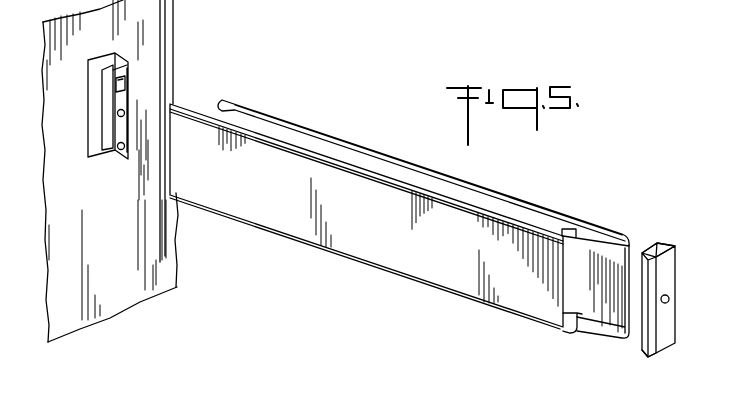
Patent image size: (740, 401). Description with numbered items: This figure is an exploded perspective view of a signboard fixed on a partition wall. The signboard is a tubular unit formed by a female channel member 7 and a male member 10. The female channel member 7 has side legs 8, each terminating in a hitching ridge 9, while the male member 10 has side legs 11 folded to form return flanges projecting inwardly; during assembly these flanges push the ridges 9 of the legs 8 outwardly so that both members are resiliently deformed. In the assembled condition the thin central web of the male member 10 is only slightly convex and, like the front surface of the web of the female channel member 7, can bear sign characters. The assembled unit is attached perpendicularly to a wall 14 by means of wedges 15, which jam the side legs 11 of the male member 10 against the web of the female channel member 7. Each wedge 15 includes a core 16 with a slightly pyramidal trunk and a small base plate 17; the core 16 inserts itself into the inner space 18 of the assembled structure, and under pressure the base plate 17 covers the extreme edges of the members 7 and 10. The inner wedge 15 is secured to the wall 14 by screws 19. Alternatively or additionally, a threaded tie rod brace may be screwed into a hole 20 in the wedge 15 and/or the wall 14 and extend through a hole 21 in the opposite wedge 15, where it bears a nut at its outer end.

The female channel member 7 is at (253, 210).
The side legs 8 is at (358, 163).
The hitching ridge 9 is at (320, 0).
The male member 10 is at (601, 304).
The side legs 11 is at (609, 232).
The wall 14 is at (163, 26).
The wedges 15 is at (124, 70).
The core 16 is at (653, 243).
The base plate 17 is at (652, 342).
The inner space 18 is at (532, 14).
The screws 19 is at (128, 91).
The hole 20 is at (118, 113).
The hole 21 is at (669, 297).